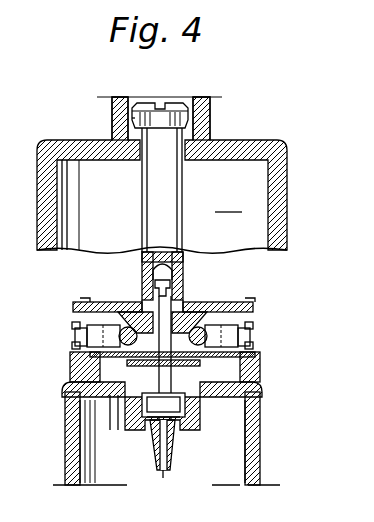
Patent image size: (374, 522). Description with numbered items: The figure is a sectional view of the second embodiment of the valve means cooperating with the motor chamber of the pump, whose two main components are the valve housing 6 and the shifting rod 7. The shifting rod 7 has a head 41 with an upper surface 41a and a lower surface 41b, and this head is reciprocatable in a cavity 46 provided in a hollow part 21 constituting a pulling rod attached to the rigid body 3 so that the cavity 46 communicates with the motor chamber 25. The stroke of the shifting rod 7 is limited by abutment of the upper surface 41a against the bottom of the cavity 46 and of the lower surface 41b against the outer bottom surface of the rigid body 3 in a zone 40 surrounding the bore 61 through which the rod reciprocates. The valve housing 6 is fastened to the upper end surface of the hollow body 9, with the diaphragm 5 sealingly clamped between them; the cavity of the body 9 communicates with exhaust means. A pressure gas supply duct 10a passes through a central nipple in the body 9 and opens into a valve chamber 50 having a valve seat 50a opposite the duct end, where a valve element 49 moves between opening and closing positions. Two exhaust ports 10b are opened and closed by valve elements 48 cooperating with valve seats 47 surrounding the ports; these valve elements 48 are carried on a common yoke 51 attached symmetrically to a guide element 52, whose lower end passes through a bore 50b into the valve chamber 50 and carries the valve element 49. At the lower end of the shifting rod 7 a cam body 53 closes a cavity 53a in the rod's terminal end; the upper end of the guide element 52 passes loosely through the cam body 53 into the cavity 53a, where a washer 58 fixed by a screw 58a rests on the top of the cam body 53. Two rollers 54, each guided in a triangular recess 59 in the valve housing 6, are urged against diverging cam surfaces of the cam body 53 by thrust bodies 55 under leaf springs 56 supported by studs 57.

The rigid body 3 is at (290, 222).
The diaphragm 5 is at (65, 432).
The valve housing 6 is at (222, 302).
The shifting rod 7 is at (140, 217).
The body 9 is at (70, 458).
The pressure gas supply duct 10a is at (165, 472).
The pressure gas exhaust ports 10b is at (142, 416).
The hollow part 21 is at (112, 105).
The motor chamber 25 is at (228, 201).
The zone 40 is at (193, 133).
The head 41 is at (155, 119).
The upper surface 41a is at (143, 102).
The lower surface 41b is at (210, 118).
The cavity 46 is at (165, 97).
The valve seats 47 is at (77, 396).
The valve elements 48 is at (73, 373).
The valve element 49 is at (180, 432).
The valve chamber 50 is at (148, 432).
The valve seat 50a is at (180, 428).
The bore 50b is at (193, 405).
The common yoke 51 is at (107, 397).
The guide element 52 is at (184, 300).
The cam body 53 is at (214, 300).
The cavity 53a is at (184, 262).
The rollers 54 is at (105, 320).
The thrust bodies 55 is at (73, 323).
The leaf springs 56 is at (75, 331).
The studs 57 is at (80, 344).
The washer 58 is at (143, 291).
The screw 58a is at (148, 267).
The triangular recess 59 is at (82, 298).
The bore 61 is at (138, 171).